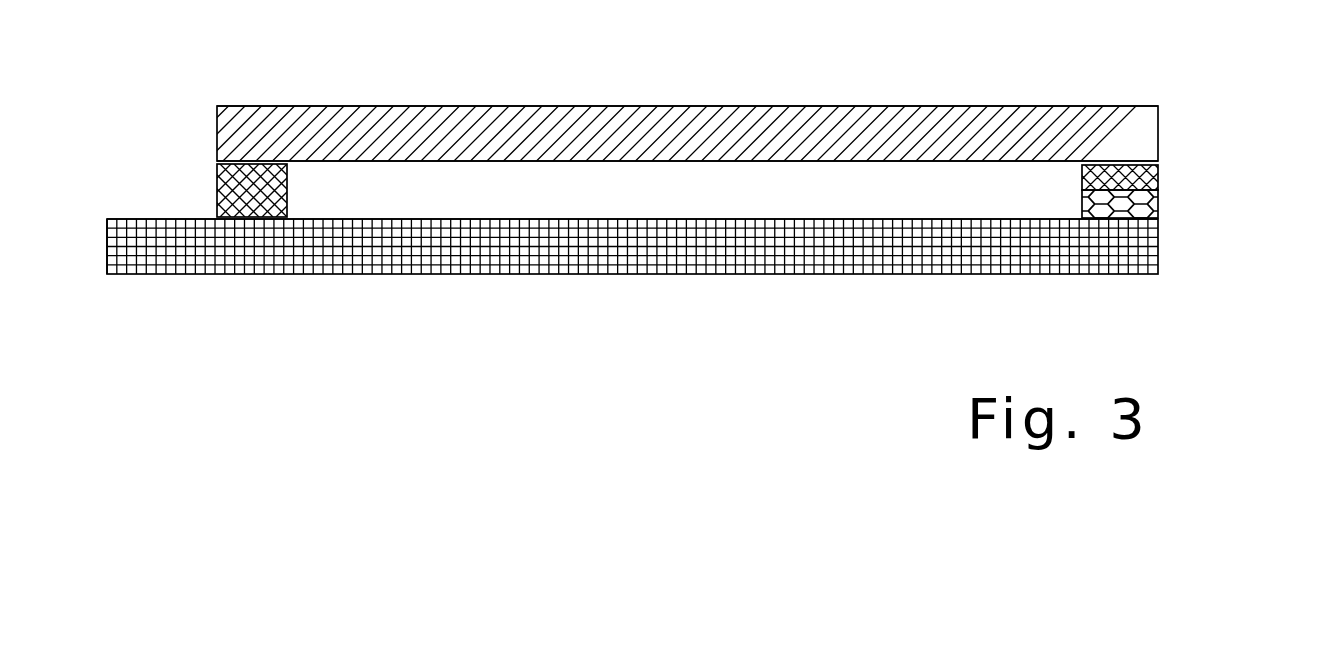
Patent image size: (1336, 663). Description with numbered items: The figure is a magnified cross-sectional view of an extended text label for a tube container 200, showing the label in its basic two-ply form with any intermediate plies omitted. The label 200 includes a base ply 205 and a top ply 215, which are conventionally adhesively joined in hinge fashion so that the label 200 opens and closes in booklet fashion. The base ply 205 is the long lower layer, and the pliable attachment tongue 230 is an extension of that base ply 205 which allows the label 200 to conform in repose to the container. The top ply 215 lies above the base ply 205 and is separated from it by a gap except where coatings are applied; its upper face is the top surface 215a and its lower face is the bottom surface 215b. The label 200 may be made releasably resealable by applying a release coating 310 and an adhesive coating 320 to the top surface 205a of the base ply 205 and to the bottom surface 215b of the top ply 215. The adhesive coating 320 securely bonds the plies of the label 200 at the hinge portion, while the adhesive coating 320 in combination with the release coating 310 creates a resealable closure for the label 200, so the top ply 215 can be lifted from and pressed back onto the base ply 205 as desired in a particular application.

The extended text label for a tube container 200 is at (671, 236).
The base ply 205 is at (1158, 248).
The top surface of base ply 205a is at (612, 220).
The top ply 215 is at (1118, 107).
The top surface of lid 215a is at (408, 106).
The bottom surface of top ply 215b is at (696, 163).
The pliable attachment tongue 230 is at (107, 247).
The release coating 310 is at (1158, 207).
The adhesive coating 320 is at (287, 185).